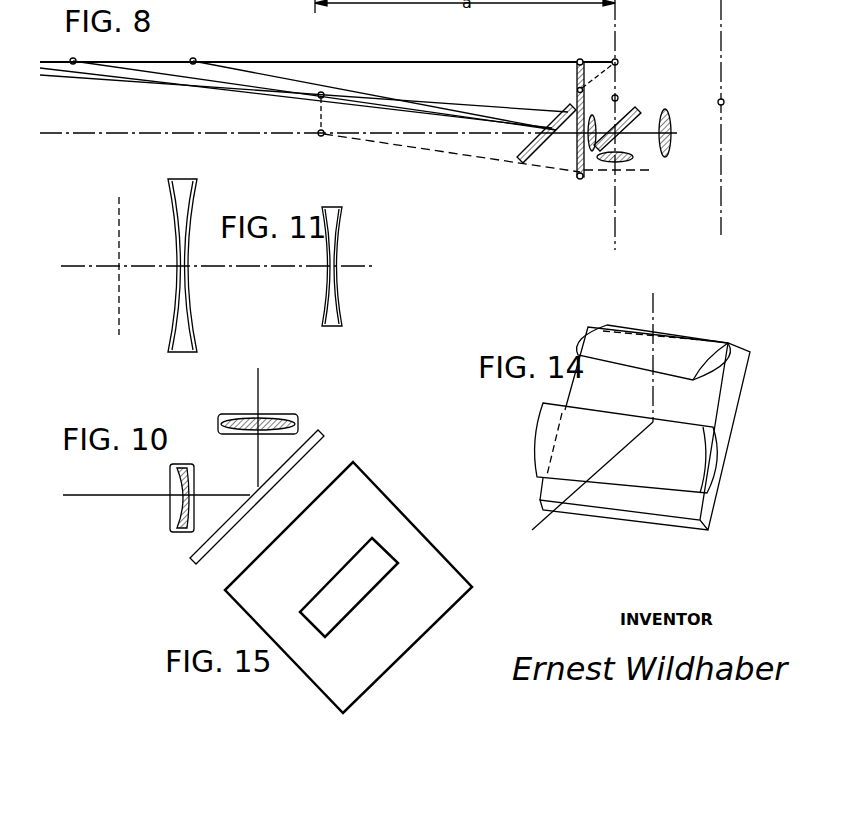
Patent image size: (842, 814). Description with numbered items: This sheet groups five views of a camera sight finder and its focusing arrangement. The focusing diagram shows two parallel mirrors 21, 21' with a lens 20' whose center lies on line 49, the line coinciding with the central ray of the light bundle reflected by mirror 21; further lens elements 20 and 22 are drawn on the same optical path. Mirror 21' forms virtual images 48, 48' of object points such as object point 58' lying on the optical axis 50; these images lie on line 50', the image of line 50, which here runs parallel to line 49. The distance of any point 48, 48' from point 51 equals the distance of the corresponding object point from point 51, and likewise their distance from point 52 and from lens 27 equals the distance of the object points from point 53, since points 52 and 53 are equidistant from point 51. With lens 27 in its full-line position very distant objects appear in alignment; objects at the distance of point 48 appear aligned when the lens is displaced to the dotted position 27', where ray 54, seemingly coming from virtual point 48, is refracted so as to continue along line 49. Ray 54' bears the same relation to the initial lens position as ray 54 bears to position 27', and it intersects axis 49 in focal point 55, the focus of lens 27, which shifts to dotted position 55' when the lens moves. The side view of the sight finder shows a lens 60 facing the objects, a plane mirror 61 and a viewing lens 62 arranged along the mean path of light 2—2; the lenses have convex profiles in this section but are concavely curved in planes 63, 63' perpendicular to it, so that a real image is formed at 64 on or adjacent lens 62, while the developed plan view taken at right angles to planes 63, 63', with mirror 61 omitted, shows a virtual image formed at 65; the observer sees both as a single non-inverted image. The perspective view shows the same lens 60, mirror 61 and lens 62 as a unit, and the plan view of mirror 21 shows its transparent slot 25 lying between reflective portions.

In FIG. 10, the mean path of light 2 is at (151, 425).
In FIG. 8, the lens 20 is at (609, 181).
In FIG. 8, the lens 20' is at (604, 120).
In FIG. 8, the mirror 21 is at (623, 114).
In FIG. 8, the mirror 21' is at (548, 133).
In FIG. 8, the lens 22 is at (671, 146).
In FIG. 15, the transparent area 25 is at (378, 565).
In FIG. 8, the lens 27 is at (564, 187).
In FIG. 8, the dotted position of lens 27' is at (574, 106).
In FIG. 8, the virtual image point 48 is at (296, 82).
In FIG. 8, the virtual image point 48' is at (373, 81).
In FIG. 8, the line 49 is at (220, 135).
In FIG. 8, the optical axis 50 is at (635, 125).
In FIG. 8, the image line 50' is at (327, 48).
In FIG. 8, the point 51 is at (618, 61).
In FIG. 8, the point 52 is at (584, 60).
In FIG. 8, the point 53 is at (618, 96).
In FIG. 8, the ray 54 is at (304, 98).
In FIG. 8, the ray 54' is at (487, 153).
In FIG. 8, the focal point 55 is at (335, 148).
In FIG. 8, the dotted focal point position 55' is at (300, 111).
In FIG. 8, the object point 58' is at (741, 117).
In FIG. 11, the lens 60 is at (184, 303).
In FIG. 10, the lens 60 is at (170, 475).
In FIG. 14, the lens 60 is at (708, 462).
In FIG. 10, the plane mirror 61 is at (324, 441).
In FIG. 15, the plane mirror 61 is at (378, 503).
In FIG. 14, the plane mirror 61 is at (733, 420).
In FIG. 11, the lens 62 is at (333, 303).
In FIG. 10, the lens 62 is at (276, 416).
In FIG. 14, the lens 62 is at (710, 360).
In FIG. 10, the plane 63 is at (114, 515).
In FIG. 10, the plane 63' is at (234, 389).
In FIG. 10, the real image 64 is at (246, 433).
In FIG. 11, the virtual image 65 is at (117, 302).